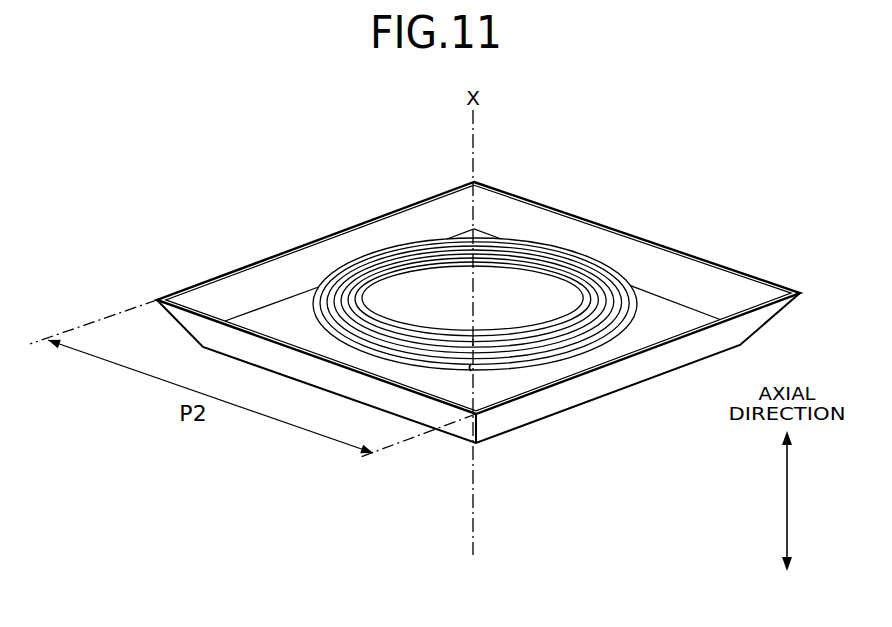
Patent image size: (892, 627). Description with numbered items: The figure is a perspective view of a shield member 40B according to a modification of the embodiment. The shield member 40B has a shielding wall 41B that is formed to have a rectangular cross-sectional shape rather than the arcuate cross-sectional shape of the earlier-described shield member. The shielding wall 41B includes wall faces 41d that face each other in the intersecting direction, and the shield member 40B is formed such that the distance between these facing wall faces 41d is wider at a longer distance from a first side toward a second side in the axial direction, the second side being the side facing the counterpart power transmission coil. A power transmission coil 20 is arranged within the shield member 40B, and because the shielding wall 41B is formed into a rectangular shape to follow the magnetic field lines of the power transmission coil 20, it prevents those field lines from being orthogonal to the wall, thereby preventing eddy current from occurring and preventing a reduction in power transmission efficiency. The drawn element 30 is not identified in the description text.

The shield member 40B is at (400, 221).
The shielding wall 41B is at (551, 200).
The wall faces 41d is at (403, 232).
The power transmission coil 20 is at (580, 274).
The core 30 is at (573, 305).